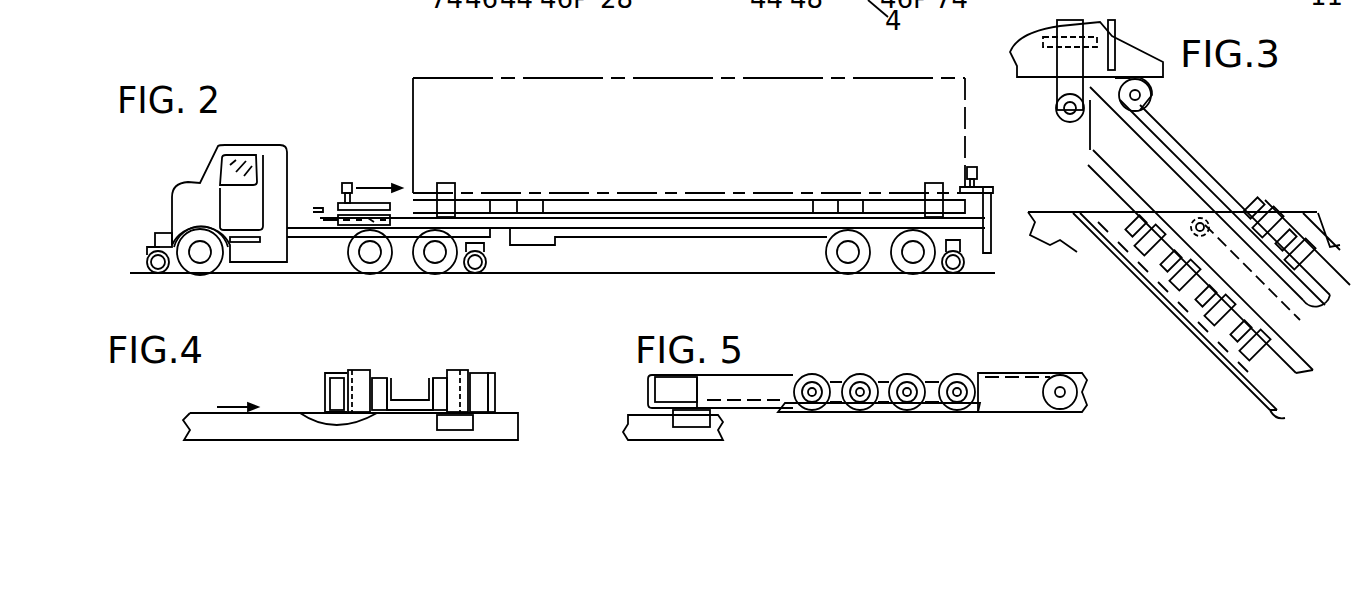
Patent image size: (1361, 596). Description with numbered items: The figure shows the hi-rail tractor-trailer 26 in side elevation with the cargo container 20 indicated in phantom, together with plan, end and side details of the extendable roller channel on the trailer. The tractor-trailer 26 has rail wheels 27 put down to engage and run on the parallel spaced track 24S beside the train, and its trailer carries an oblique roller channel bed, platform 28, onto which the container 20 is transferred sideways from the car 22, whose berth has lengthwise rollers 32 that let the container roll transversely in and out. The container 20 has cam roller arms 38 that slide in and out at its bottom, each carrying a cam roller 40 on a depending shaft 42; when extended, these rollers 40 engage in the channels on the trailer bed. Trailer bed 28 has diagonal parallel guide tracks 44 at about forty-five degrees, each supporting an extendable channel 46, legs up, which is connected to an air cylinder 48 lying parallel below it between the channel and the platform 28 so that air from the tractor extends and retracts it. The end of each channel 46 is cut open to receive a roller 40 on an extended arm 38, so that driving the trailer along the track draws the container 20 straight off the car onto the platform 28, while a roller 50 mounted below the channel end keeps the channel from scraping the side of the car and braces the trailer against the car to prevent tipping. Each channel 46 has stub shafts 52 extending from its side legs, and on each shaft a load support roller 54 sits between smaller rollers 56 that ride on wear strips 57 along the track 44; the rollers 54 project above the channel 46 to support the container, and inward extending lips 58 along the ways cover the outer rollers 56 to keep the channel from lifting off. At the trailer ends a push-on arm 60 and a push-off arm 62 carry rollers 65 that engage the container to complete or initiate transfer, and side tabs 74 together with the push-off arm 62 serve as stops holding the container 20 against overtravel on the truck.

In FIG. 2, the cargo container 20 is at (412, 150).
In FIG. 3, the cargo container 20 is at (1123, 44).
In FIG. 3, the car 22 is at (1037, 70).
In FIG. 5, the car 22 is at (642, 428).
In FIG. 2, the parallel spaced track 24S is at (577, 275).
In FIG. 2, the hi-rail tractor-trailer 26 is at (354, 267).
In FIG. 2, the rail wheels 27 is at (157, 275).
In FIG. 2, the platform 28 is at (670, 229).
In FIG. 3, the platform 28 is at (1075, 248).
In FIG. 4, the platform 28 is at (193, 415).
In FIG. 3, the rollers 32 is at (1153, 67).
In FIG. 3, the cam roller arms 38 is at (1057, 86).
In FIG. 3, the cam roller 40 is at (1080, 123).
In FIG. 3, the shaft 42 is at (1058, 112).
In FIG. 3, the guide tracks 44 is at (1207, 373).
In FIG. 4, the guide tracks 44 is at (235, 394).
In FIG. 5, the guide tracks 44 is at (948, 415).
In FIG. 3, the extendable channel 46 is at (1170, 150).
In FIG. 4, the extendable channel 46 is at (437, 383).
In FIG. 5, the extendable channel 46 is at (650, 392).
In FIG. 3, the air cylinder 48 is at (1283, 377).
In FIG. 3, the roller 50 is at (1160, 112).
In FIG. 4, the roller 50 is at (473, 420).
In FIG. 5, the roller 50 is at (710, 422).
In FIG. 3, the stub shafts 52 is at (1200, 227).
In FIG. 4, the stub shafts 52 is at (347, 367).
In FIG. 5, the stub shafts 52 is at (811, 388).
In FIG. 3, the load support roller 54 is at (1110, 213).
In FIG. 4, the load support roller 54 is at (355, 370).
In FIG. 5, the load support roller 54 is at (960, 373).
In FIG. 3, the smaller roller 56 is at (1113, 187).
In FIG. 4, the smaller roller 56 is at (327, 377).
In FIG. 5, the smaller roller 56 is at (893, 405).
In FIG. 3, the wear strips 57 is at (1275, 412).
In FIG. 4, the wear strips 57 is at (333, 423).
In FIG. 5, the wear strips 57 is at (970, 410).
In FIG. 3, the inward extending lips 58 is at (1140, 283).
In FIG. 4, the inward extending lips 58 is at (323, 382).
In FIG. 5, the inward extending lips 58 is at (1033, 373).
In FIG. 2, the push-on arm 60 is at (340, 205).
In FIG. 2, the push-off arm 62 is at (967, 187).
In FIG. 2, the roller 65 is at (348, 183).
In FIG. 2, the side tabs 74 is at (448, 183).